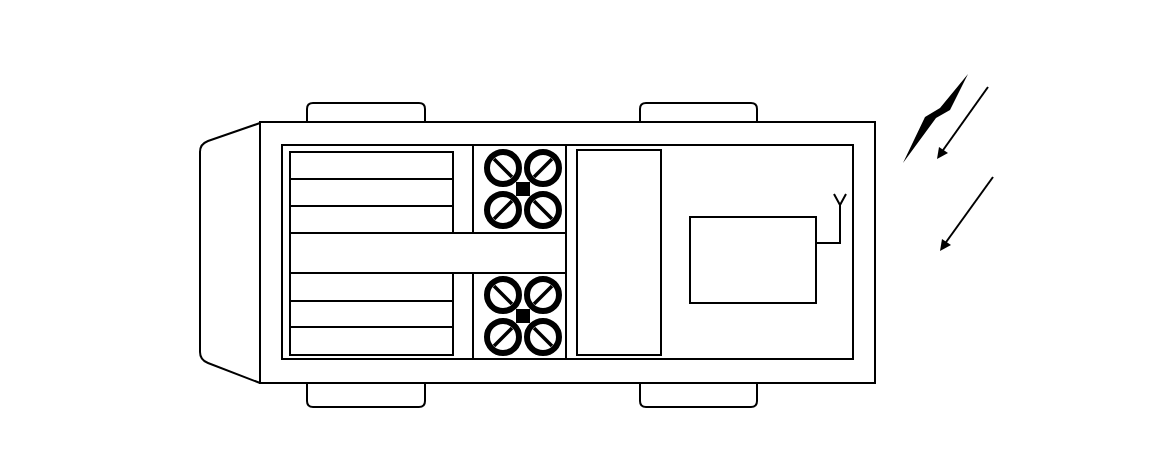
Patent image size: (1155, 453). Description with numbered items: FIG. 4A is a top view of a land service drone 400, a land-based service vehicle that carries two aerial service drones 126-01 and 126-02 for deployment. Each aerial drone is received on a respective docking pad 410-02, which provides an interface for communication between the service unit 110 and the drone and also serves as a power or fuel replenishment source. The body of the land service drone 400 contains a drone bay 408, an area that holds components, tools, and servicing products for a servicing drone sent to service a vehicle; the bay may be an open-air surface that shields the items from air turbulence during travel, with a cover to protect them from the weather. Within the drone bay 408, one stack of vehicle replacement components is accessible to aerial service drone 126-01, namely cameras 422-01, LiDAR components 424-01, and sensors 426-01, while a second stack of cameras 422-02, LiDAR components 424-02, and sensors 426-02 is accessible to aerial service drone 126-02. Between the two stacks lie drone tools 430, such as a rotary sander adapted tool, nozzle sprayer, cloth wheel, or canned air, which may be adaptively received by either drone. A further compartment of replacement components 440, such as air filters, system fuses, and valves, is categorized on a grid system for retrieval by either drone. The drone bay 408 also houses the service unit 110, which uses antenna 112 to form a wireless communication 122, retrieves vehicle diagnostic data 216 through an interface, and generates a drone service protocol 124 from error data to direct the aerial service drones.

The land service drone 400 is at (485, 263).
The drone bay 408 is at (591, 252).
The cameras 422-01 is at (371, 165).
The LiDAR components 424-01 is at (371, 192).
The sensors 426-01 is at (371, 219).
The drone tools 430 is at (428, 253).
The sensors 426-02 is at (371, 287).
The LiDAR components 424-02 is at (371, 314).
The cameras 422-02 is at (371, 341).
The docking pad 410-02 is at (600, 252).
The aerial service drone 126-01 is at (558, 149).
The aerial service drone 126-02 is at (559, 355).
The replacement components 440 is at (695, 252).
The service unit 110 is at (753, 260).
The antenna 112 is at (842, 232).
The wireless communication 122 is at (860, 98).
The vehicle diagnostic data 216 is at (1008, 122).
The drone service protocol 124 is at (1030, 214).